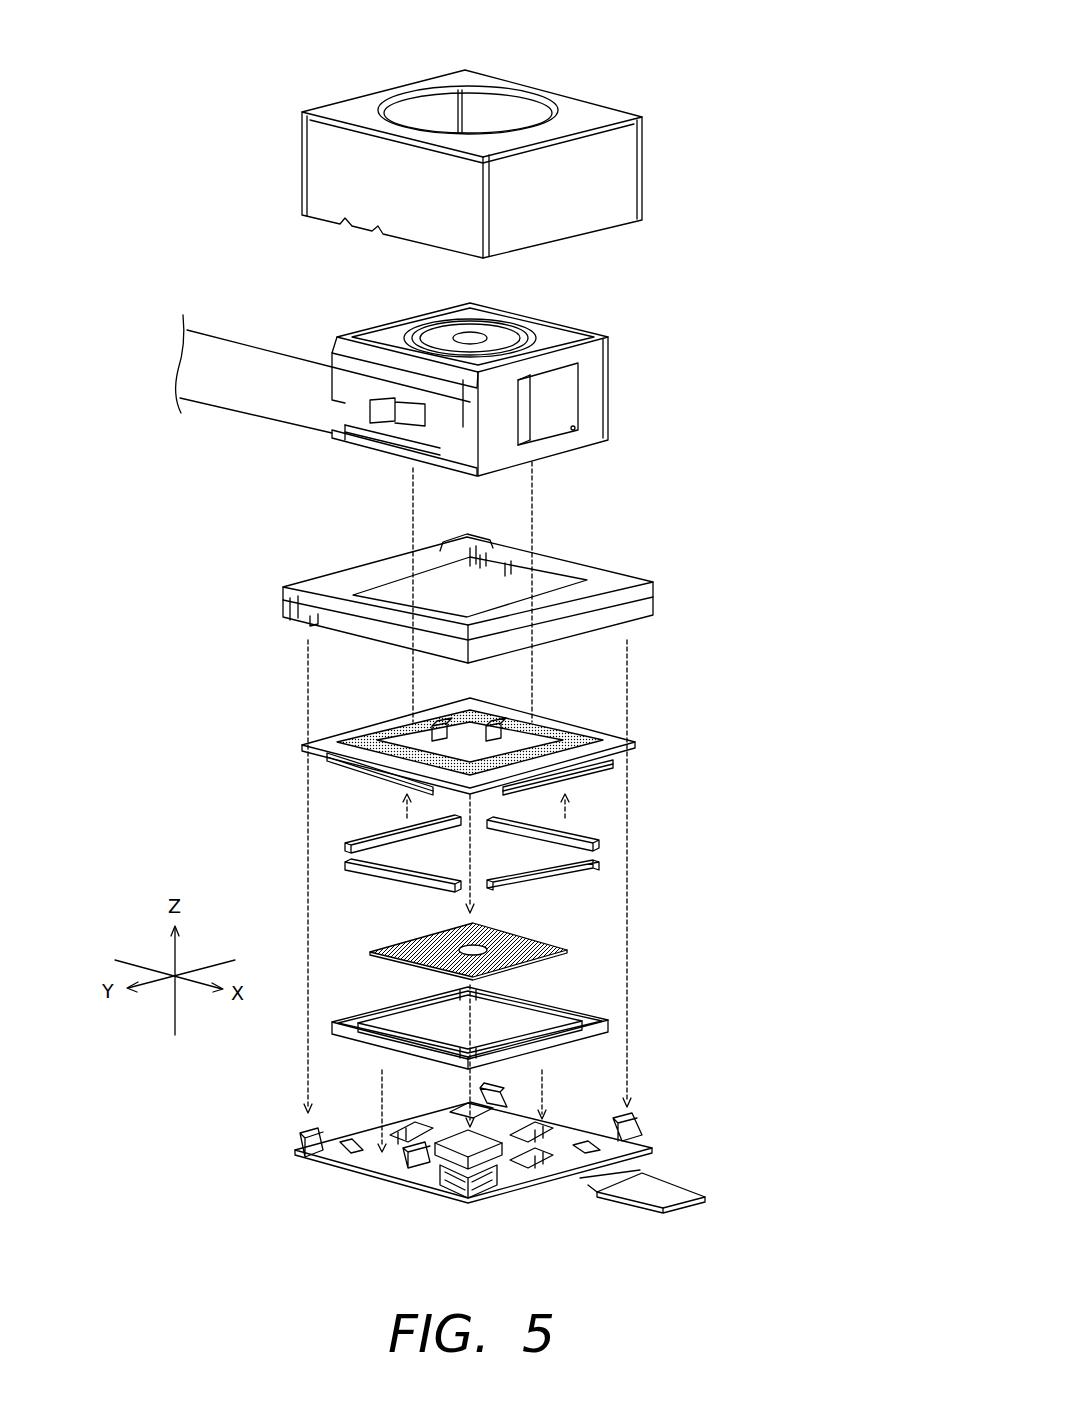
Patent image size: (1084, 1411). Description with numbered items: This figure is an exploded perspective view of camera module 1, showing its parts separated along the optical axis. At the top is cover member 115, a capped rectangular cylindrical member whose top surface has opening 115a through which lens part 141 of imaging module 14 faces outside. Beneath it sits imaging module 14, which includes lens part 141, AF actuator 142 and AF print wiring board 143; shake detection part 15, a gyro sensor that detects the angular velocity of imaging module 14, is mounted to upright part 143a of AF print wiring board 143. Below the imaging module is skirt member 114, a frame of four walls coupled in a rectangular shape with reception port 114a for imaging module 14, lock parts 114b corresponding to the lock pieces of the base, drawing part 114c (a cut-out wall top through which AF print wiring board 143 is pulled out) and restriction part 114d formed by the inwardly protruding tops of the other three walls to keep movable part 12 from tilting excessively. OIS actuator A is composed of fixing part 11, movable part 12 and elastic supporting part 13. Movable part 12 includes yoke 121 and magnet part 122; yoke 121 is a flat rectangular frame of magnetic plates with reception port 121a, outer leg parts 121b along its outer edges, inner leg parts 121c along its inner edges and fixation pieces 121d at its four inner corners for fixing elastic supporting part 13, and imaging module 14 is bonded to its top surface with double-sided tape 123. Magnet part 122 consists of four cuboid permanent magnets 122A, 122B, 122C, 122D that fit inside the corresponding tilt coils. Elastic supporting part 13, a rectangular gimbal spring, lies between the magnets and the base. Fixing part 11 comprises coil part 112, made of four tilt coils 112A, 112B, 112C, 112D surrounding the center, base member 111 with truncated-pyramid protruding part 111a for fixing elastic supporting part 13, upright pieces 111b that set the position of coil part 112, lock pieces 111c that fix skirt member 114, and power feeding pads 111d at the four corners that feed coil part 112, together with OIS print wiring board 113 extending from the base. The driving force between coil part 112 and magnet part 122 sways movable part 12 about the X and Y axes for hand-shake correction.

The camera module 1 is at (198, 135).
The cover member 115 is at (641, 164).
The opening 115a is at (524, 112).
The imaging module 14 is at (477, 376).
The lens part 141 is at (437, 342).
The AF actuator 142 is at (557, 334).
The AF print wiring board 143 is at (257, 412).
The upright part 143a is at (598, 370).
The shake detection part 15 is at (573, 403).
The skirt member 114 is at (513, 576).
The reception port 114a is at (482, 585).
The lock parts 114b is at (310, 622).
The drawing part 114c is at (356, 578).
The restriction part 114d is at (557, 552).
The movable part 12 is at (514, 792).
The yoke 121 is at (483, 732).
The reception port 121a is at (468, 717).
The outer leg parts 121b is at (327, 758).
The inner leg parts 121c is at (393, 713).
The fixation pieces 121d is at (480, 713).
The double-sided tape 123 is at (565, 730).
The magnet part 122 is at (521, 855).
The permanent magnet 122A is at (552, 873).
The permanent magnet 122B is at (567, 840).
The permanent magnet 122C is at (375, 830).
The permanent magnet 122D is at (373, 873).
The elastic supporting part 13 is at (427, 937).
The fixing part 11 is at (514, 1111).
The coil part 112 is at (526, 1030).
The tilt coil 112A is at (552, 1057).
The tilt coil 112B is at (558, 1005).
The tilt coil 112C is at (372, 1008).
The tilt coil 112D is at (377, 1057).
The base member 111 is at (488, 1167).
The protruding part 111a is at (485, 1147).
The upright pieces 111b is at (397, 1173).
The lock pieces 111c is at (308, 1158).
The power feeding pads 111d is at (487, 1200).
The OIS print wiring board 113 is at (638, 1205).
The OIS actuator A is at (820, 1217).